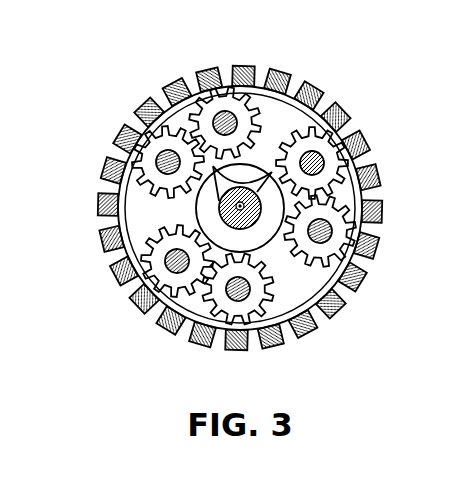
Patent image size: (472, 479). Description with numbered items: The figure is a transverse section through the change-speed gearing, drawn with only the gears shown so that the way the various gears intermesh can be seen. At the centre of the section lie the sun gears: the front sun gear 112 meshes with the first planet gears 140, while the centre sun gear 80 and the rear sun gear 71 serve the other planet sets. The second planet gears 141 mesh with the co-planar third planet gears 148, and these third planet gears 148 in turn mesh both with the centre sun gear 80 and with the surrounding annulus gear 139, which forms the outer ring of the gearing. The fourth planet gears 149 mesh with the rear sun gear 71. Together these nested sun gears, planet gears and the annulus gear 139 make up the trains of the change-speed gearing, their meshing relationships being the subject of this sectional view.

The rear sun gear 71 is at (267, 238).
The centre sun gear 80 is at (213, 199).
The front sun gear 112 is at (253, 167).
The annulus gear 139 is at (100, 197).
The first planet gears 140 is at (266, 88).
The second planet gears 141 is at (228, 100).
The third planet gears 148 is at (158, 120).
The fourth planet gears 149 is at (155, 148).